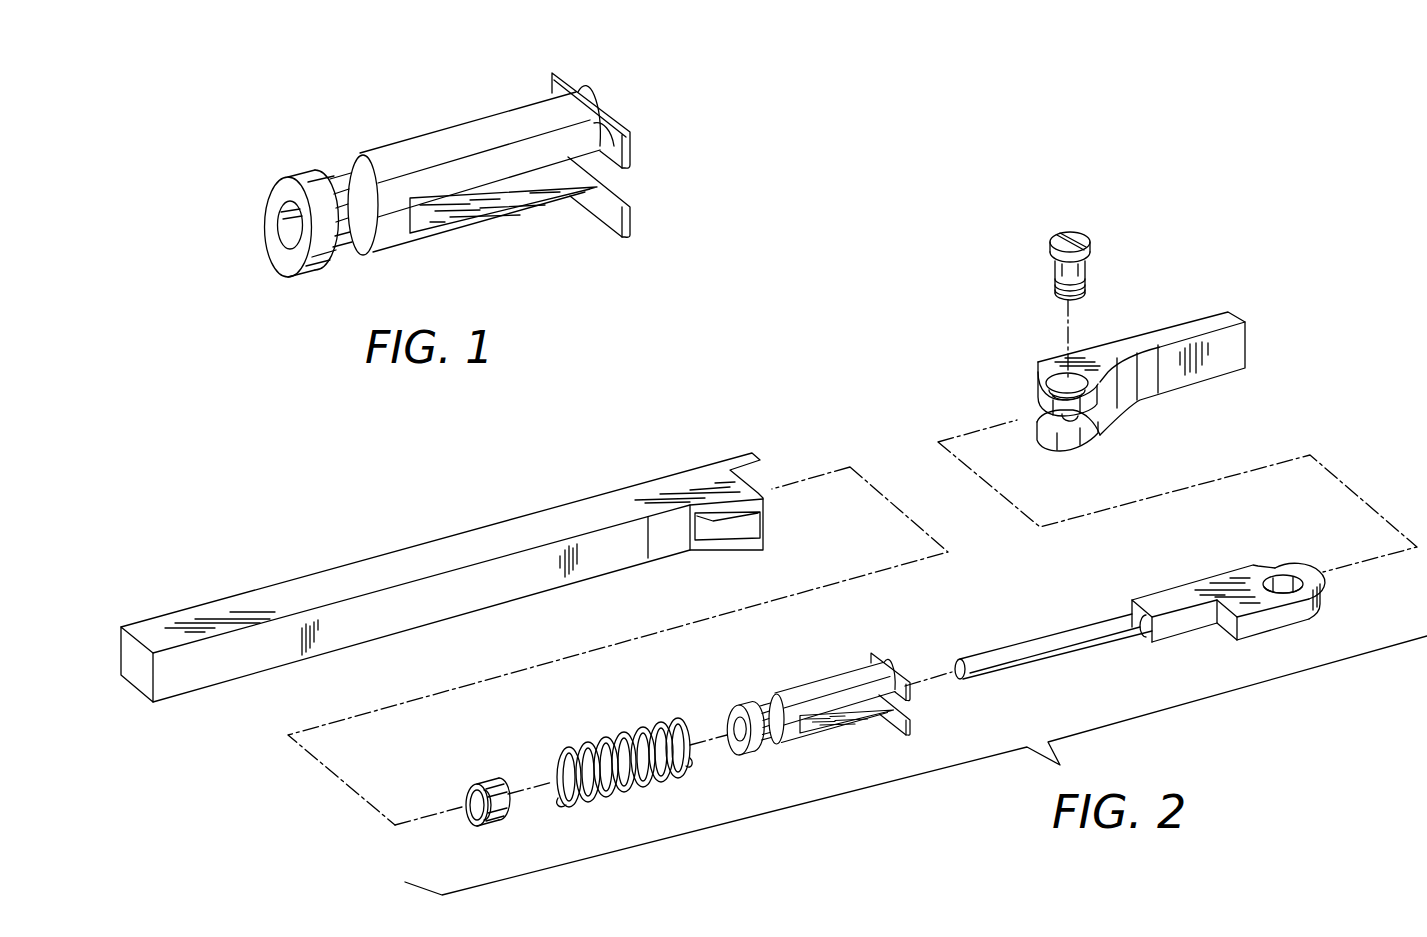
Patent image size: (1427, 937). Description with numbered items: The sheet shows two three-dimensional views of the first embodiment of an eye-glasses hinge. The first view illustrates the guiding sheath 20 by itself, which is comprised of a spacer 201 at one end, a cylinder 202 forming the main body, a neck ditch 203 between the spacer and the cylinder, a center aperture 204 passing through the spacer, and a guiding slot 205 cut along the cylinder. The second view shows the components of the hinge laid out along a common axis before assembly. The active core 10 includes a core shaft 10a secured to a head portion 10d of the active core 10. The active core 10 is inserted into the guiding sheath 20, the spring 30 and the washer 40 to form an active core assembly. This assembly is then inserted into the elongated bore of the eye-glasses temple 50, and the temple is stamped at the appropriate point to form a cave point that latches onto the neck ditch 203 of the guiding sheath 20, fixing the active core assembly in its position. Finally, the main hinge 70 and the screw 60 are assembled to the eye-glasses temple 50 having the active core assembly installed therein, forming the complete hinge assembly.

In FIG. 1, the spacer 201 is at (598, 138).
In FIG. 1, the cylinder 202 is at (481, 137).
In FIG. 1, the neck ditch 203 is at (340, 183).
In FIG. 1, the center aperture 204 is at (287, 222).
In FIG. 1, the guiding slot 205 is at (508, 195).
In FIG. 2, the active core 10 is at (1167, 601).
In FIG. 2, the core shaft 10a is at (1045, 650).
In FIG. 2, the head portion 10d is at (1287, 570).
In FIG. 2, the guiding sheath 20 is at (802, 693).
In FIG. 2, the spring 30 is at (610, 740).
In FIG. 2, the washer 40 is at (485, 778).
In FIG. 2, the eye-glasses temple 50 is at (373, 572).
In FIG. 2, the screw 60 is at (1083, 232).
In FIG. 2, the main hinge 70 is at (1217, 367).